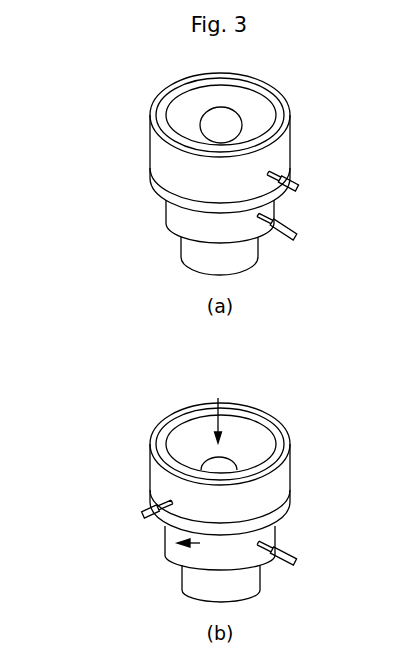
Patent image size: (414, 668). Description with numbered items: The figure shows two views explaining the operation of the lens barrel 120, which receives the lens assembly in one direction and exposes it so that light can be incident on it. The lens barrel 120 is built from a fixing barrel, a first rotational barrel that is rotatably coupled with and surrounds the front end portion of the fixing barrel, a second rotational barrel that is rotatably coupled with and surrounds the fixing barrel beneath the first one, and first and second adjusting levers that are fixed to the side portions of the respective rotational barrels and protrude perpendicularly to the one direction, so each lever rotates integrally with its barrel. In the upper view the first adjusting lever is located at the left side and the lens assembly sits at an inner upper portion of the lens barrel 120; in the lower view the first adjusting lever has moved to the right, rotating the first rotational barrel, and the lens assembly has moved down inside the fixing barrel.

The lens barrel 120 is at (219, 500).